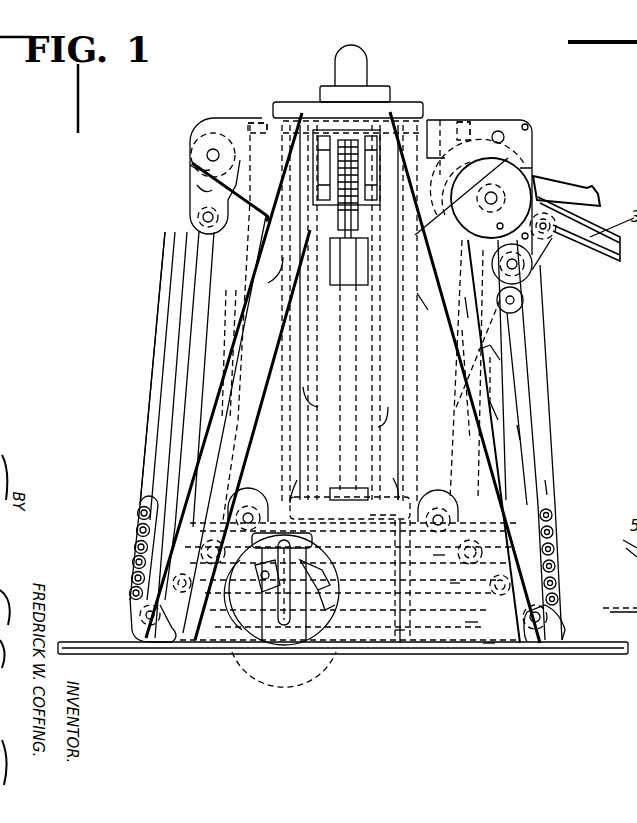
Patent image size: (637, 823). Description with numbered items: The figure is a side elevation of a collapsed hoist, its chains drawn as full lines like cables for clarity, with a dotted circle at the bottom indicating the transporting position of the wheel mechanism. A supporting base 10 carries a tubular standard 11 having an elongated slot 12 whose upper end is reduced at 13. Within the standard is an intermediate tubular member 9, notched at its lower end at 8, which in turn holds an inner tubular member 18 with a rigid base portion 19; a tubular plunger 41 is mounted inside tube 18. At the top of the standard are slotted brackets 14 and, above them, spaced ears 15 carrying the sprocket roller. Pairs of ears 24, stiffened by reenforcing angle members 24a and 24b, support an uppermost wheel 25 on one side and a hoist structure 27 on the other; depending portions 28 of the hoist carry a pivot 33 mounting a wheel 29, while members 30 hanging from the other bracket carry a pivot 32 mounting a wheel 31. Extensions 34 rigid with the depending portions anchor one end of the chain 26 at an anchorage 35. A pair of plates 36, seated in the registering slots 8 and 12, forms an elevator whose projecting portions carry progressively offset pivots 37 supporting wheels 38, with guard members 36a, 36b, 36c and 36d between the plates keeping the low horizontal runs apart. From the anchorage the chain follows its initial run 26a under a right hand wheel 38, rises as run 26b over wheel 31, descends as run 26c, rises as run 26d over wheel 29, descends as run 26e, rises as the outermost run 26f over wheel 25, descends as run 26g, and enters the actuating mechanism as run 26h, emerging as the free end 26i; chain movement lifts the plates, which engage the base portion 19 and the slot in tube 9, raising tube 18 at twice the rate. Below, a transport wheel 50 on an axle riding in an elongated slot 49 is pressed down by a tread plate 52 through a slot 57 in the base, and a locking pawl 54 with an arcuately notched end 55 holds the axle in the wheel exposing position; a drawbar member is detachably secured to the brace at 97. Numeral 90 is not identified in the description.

The notch 8 is at (342, 476).
The intermediate tubular member 9 is at (400, 633).
The supporting base 10 is at (210, 650).
The tubular standard 11 is at (277, 470).
The slot 12 is at (430, 312).
The reduced slot end 13 is at (266, 281).
The slotted bracket 14 is at (333, 272).
The spaced ears 15 is at (322, 130).
The inner tubular member 18 is at (388, 405).
The base portion 19 is at (385, 520).
The ears or brackets 24 is at (223, 147).
The reenforcing and spacing angle member 24a is at (260, 127).
The reenforcing angle member 24b is at (430, 122).
The wheel 25 is at (192, 167).
The chain 26 is at (172, 248).
The initial run 26a is at (517, 425).
The run 26b is at (183, 358).
The run 26c is at (212, 315).
The run 26d is at (490, 402).
The run 26e is at (545, 480).
The run 26f is at (147, 442).
The run 26g is at (237, 262).
The run 26h is at (490, 345).
The free end of chain 26i is at (557, 186).
The hoist structure 27 is at (520, 160).
The depending portions 28 is at (507, 270).
The wheel 29 is at (530, 258).
The members 30 is at (198, 188).
The wheel 31 is at (196, 230).
The pivot 32 is at (202, 213).
The pivot 33 is at (512, 302).
The extensions 34 is at (465, 297).
The anchorage 35 is at (490, 345).
The plates 36 is at (543, 628).
The guard member 36a is at (487, 645).
The guard member 36b is at (470, 622).
The guard member 36c is at (450, 583).
The guard member 36d is at (433, 555).
The pivots 37 is at (445, 520).
The wheels 38 is at (438, 512).
The plunger 41 is at (301, 388).
The elongated slot 49 is at (277, 603).
The wheel 50 is at (243, 640).
The tread plate 52 is at (313, 548).
The locking pawl 54 is at (298, 633).
The arcuately notched end 55 is at (330, 630).
The slot 57 is at (337, 640).
The rail 90 is at (555, 245).
The detachable securement 97 is at (475, 440).